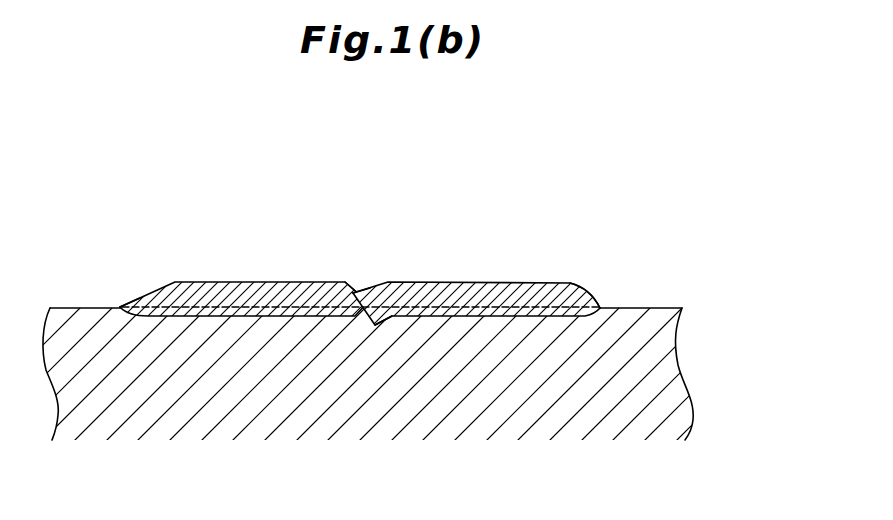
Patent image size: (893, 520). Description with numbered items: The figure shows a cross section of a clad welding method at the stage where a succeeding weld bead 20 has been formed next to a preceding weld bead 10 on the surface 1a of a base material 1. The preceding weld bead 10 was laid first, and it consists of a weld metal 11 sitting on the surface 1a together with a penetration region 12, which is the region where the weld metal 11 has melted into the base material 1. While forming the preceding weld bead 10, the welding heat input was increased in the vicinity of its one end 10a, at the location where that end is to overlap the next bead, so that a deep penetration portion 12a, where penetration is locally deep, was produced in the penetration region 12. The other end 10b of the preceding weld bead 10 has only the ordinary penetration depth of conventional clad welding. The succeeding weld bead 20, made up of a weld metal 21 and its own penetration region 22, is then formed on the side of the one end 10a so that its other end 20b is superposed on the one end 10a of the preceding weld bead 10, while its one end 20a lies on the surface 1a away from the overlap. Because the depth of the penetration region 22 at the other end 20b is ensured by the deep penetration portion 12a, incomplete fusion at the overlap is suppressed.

The base material 1 is at (705, 369).
The surface 1a is at (655, 308).
The preceding weld bead 10 is at (506, 300).
The one end 10a is at (343, 290).
The other end 10b is at (598, 308).
The weld metal 11 is at (452, 277).
The penetration region 12 is at (488, 329).
The deep penetration portion 12a is at (378, 326).
The succeeding weld bead 20 is at (267, 225).
The one end 20a is at (120, 307).
The other end 20b is at (396, 300).
The weld metal 21 is at (230, 279).
The penetration region 22 is at (266, 329).